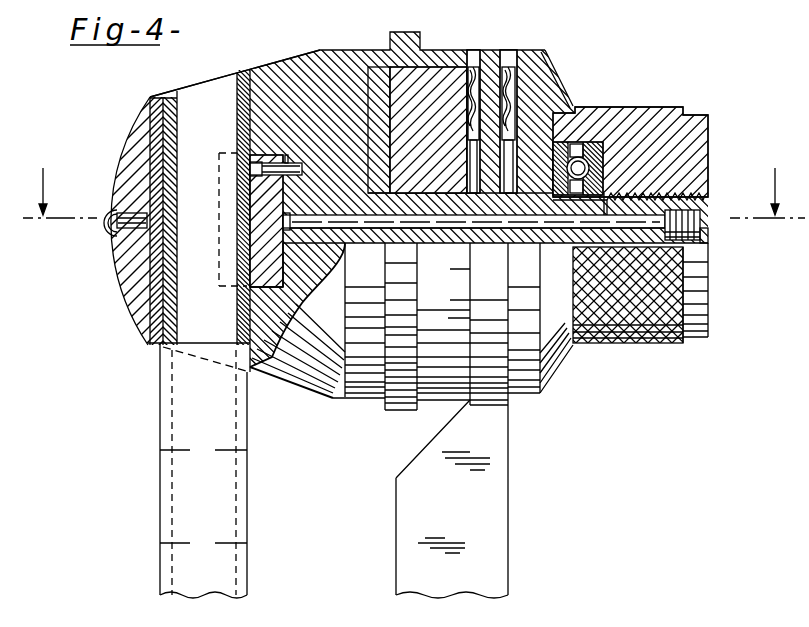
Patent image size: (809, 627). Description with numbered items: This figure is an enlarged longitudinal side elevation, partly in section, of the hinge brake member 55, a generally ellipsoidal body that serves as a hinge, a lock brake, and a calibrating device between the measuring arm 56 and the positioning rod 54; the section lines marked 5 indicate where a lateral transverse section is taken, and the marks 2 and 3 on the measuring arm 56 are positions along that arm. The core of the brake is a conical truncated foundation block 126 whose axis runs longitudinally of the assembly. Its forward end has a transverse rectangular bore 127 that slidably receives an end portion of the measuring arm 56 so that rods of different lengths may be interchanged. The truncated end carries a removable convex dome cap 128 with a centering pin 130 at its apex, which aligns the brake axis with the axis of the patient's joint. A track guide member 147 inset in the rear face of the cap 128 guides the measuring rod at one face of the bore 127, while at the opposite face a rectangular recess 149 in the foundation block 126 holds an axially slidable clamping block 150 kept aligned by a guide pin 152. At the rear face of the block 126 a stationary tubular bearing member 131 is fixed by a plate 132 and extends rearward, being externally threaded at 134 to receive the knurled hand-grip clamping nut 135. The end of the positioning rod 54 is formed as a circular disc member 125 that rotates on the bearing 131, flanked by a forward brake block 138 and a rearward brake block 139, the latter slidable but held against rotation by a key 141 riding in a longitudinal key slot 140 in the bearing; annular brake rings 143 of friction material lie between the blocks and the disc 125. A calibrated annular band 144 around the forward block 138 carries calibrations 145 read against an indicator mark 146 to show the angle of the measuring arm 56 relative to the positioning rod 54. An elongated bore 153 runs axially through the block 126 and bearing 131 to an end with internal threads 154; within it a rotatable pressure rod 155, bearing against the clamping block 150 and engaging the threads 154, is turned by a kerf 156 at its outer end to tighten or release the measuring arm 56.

The brake member 55 is at (289, 62).
The foundation block 126 is at (322, 60).
The transverse rectangular bore 127 is at (248, 75).
The convex forward end dome cap 128 is at (128, 265).
The centering pin 130 is at (110, 210).
The bearing member 131 is at (448, 193).
The plate 132 is at (378, 83).
The threads 134 is at (697, 197).
The knurled hand-grip clamping nut 135 is at (627, 344).
The forward brake block 138 is at (428, 72).
The rearward brake block 139 is at (541, 66).
The longitudinal key slot 140 is at (695, 147).
The key 141 is at (530, 200).
The annular planar brake rings 143 is at (476, 80).
The calibrated annular band 144 is at (432, 408).
The calibrations 145 is at (452, 306).
The indicator mark 146 is at (462, 253).
The track guide member 147 is at (160, 97).
The transverse lateral rectangular recess 149 is at (268, 290).
The clamping block 150 is at (260, 237).
The guide pin 152 is at (268, 160).
The elongated bore 153 is at (340, 246).
The internal threads 154 is at (707, 240).
The pressure rod 155 is at (316, 222).
The kerf 156 is at (706, 224).
The circular disc member 125 is at (536, 395).
The positioning rod 54 is at (463, 516).
The measuring arm 56 is at (222, 417).
The section line 2 is at (203, 452).
The section line 3 is at (203, 546).
The section line 5 is at (414, 211).